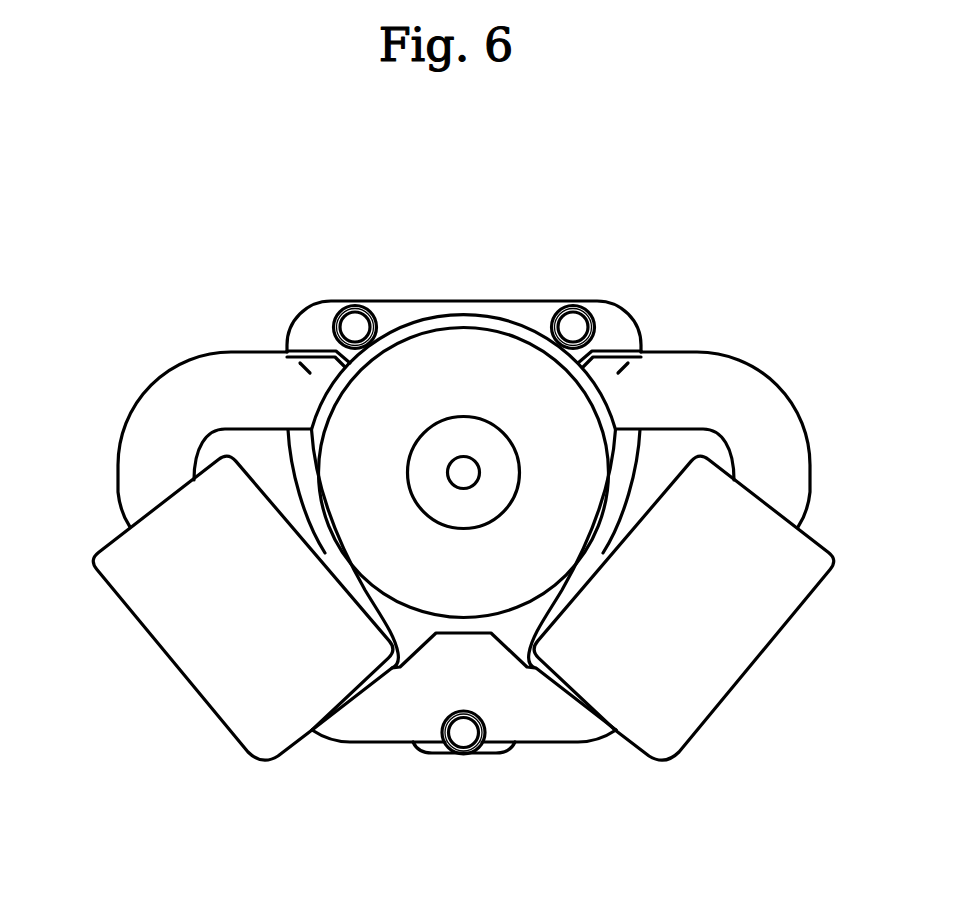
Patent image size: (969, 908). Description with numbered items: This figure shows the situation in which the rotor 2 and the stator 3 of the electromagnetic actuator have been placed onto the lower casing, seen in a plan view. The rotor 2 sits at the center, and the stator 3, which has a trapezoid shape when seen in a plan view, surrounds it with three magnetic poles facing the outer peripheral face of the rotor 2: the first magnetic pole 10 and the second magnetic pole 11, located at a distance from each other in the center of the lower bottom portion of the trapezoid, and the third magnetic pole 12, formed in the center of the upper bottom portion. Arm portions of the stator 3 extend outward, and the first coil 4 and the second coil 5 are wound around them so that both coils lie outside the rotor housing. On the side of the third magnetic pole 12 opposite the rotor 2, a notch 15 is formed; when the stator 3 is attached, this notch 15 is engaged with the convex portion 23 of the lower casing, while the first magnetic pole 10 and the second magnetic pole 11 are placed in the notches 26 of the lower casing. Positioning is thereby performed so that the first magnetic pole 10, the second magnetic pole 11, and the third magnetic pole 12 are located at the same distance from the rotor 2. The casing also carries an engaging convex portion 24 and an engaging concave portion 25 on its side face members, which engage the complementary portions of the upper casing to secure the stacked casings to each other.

The rotor 2 is at (452, 367).
The stator 3 is at (163, 423).
The first coil 4 is at (163, 587).
The second coil 5 is at (763, 584).
The first magnetic pole 10 is at (310, 380).
The second magnetic pole 11 is at (623, 383).
The third magnetic pole 12 is at (423, 693).
The notch 15 is at (512, 801).
The convex portion 23 is at (466, 738).
The engaging convex portion 24 is at (580, 316).
The engaging concave portion 25 is at (347, 318).
The notches 26 is at (476, 309).